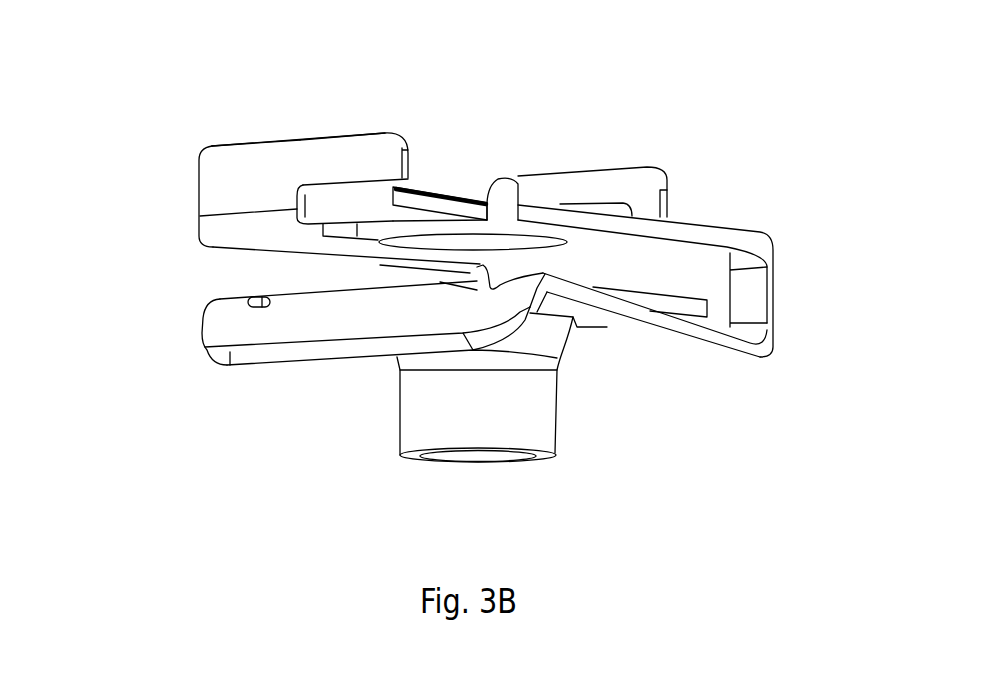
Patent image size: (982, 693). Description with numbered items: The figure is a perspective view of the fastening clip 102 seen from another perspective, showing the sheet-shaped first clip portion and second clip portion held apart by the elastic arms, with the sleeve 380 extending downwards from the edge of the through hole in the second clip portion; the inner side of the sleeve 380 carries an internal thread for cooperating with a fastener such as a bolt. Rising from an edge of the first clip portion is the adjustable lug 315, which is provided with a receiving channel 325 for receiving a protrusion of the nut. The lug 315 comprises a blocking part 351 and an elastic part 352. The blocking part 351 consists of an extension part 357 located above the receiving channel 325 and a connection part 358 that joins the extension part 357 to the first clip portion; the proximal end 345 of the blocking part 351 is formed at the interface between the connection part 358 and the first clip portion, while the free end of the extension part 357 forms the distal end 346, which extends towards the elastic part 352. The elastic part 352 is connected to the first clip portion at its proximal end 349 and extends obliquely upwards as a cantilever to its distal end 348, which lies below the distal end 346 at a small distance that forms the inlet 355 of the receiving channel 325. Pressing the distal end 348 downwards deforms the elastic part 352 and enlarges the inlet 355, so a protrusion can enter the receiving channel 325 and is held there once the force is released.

The fastening clip 102 is at (758, 195).
The lug 315 is at (280, 160).
The receiving channel 325 is at (362, 197).
The proximal end of the blocking part 345 is at (237, 227).
The distal end of the blocking part 346 is at (400, 150).
The distal end of the elastic part 348 is at (400, 199).
The proximal end of the elastic part 349 is at (487, 203).
The blocking part 351 is at (227, 167).
The elastic part 352 is at (433, 197).
The inlet 355 is at (423, 186).
The extension part 357 is at (325, 150).
The connection part 358 is at (217, 203).
The sleeve 380 is at (450, 392).